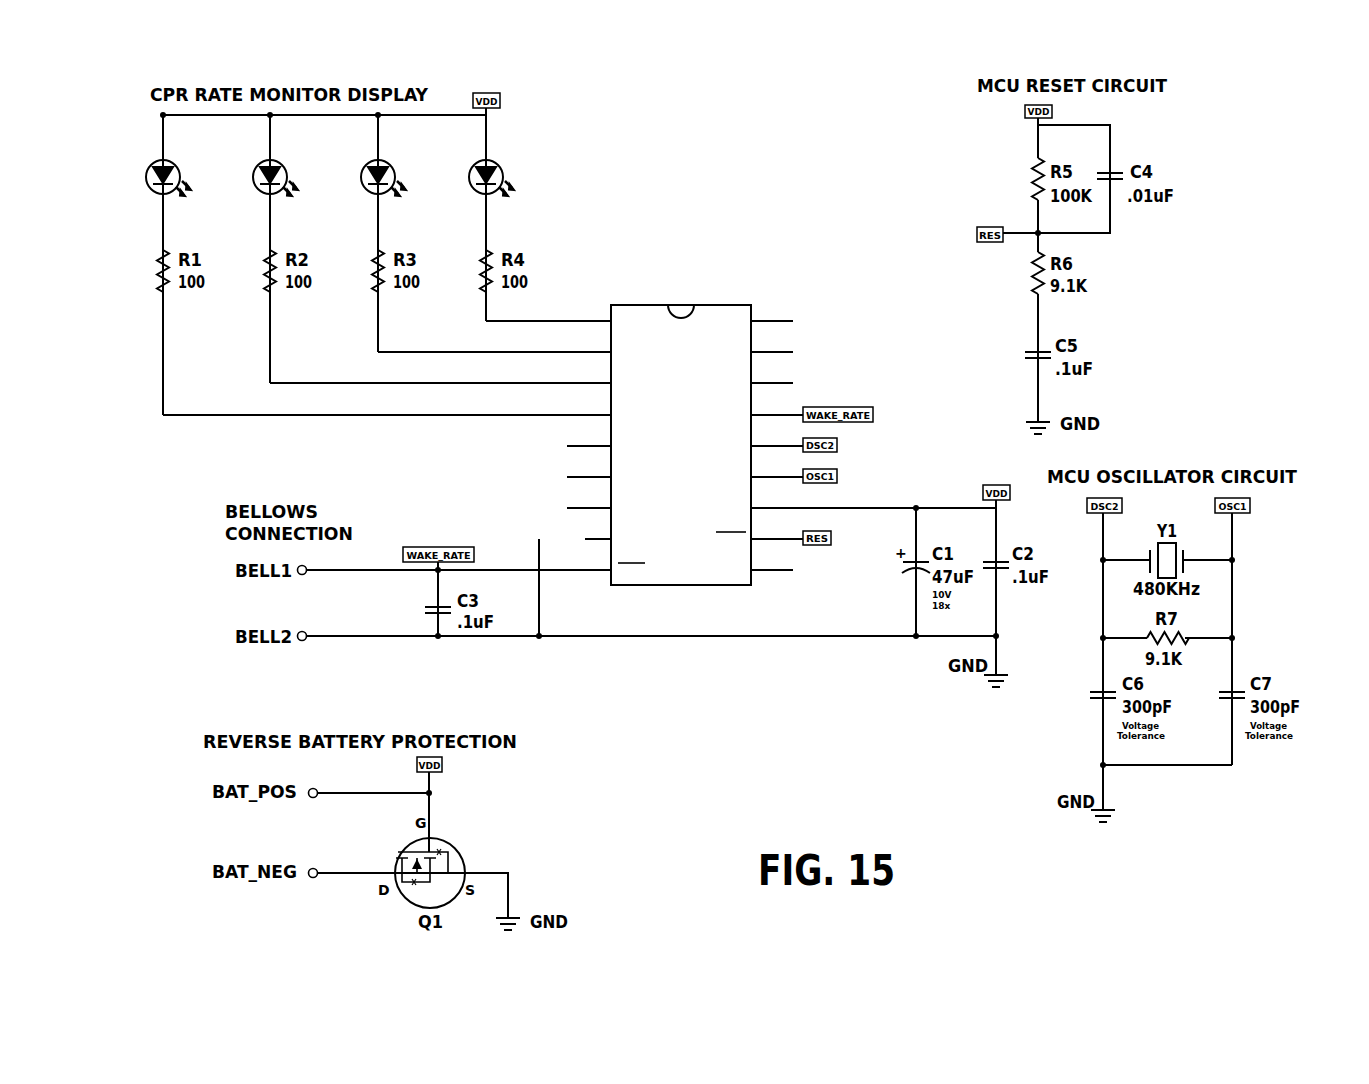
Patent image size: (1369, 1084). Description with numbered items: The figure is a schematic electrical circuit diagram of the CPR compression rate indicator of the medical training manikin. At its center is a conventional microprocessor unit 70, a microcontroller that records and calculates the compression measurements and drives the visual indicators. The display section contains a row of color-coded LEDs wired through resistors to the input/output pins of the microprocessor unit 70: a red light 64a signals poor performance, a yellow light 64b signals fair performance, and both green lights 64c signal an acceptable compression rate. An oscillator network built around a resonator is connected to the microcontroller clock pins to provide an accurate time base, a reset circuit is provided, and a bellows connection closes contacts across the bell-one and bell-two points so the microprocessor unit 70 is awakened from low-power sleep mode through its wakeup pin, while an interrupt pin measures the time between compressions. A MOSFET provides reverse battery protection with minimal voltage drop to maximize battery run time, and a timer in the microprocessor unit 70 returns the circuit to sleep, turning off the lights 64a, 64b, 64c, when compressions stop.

The red light 64a is at (474, 191).
The yellow light 64b is at (366, 190).
The green lights 64c is at (258, 190).
The microprocessor unit 70 is at (704, 290).